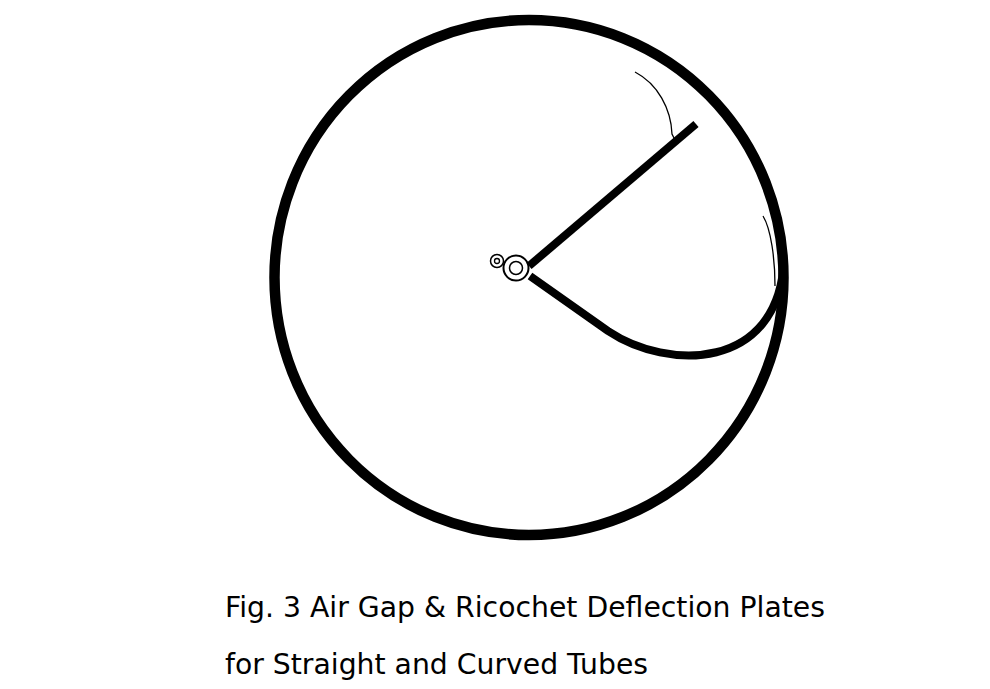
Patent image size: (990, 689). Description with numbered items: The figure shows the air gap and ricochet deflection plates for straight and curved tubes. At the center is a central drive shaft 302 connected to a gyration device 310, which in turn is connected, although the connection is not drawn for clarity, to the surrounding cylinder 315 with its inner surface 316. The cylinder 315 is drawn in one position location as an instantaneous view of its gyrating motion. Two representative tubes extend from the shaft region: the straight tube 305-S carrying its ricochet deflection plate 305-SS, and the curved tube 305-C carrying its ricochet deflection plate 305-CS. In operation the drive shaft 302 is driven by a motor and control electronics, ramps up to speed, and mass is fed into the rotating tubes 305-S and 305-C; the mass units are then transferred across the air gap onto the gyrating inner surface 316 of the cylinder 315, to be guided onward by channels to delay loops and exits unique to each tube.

The central drive shaft 302 is at (508, 277).
The gyration device 310 is at (480, 247).
The cylinder 315 is at (254, 271).
The inner surface 316 is at (300, 168).
The straight tube 305-S is at (547, 217).
The ricochet deflection plate of the straight tube 305-SS is at (648, 91).
The curved tube 305-C is at (576, 311).
The ricochet deflection plate of the curved tube 305-CS is at (755, 221).